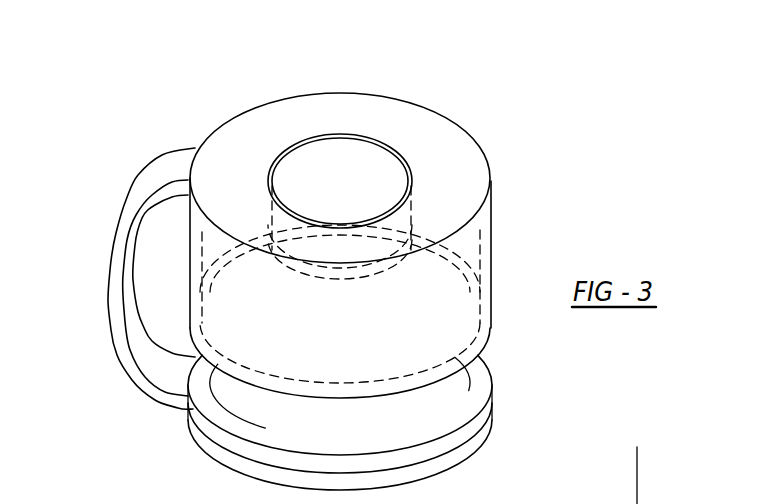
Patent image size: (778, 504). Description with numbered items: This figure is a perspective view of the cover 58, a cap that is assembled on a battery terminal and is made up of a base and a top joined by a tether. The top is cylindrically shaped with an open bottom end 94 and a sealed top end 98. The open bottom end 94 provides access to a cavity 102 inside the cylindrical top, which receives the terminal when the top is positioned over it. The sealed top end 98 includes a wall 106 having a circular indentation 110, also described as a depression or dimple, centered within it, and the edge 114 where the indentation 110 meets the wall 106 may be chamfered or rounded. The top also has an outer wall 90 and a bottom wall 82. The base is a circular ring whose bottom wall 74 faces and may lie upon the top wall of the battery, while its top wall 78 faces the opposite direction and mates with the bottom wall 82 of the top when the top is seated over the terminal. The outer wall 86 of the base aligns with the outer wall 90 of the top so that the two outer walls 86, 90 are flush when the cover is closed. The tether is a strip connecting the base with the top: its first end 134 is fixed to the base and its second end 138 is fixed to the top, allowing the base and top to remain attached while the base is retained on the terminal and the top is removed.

The cover 58 is at (321, 253).
The sealed top end 98 is at (394, 113).
The indentation 110 is at (302, 153).
The edge 114 is at (326, 134).
The outer wall of top 90 is at (321, 314).
The wall 106 is at (487, 223).
The open bottom end 94 is at (252, 387).
The bottom wall of top 82 is at (488, 328).
The cavity 102 is at (255, 277).
The second end 138 is at (190, 167).
The first end 134 is at (190, 373).
The top wall of base 78 is at (482, 378).
The outer wall of base 86 is at (493, 417).
The bottom wall of base 74 is at (457, 460).